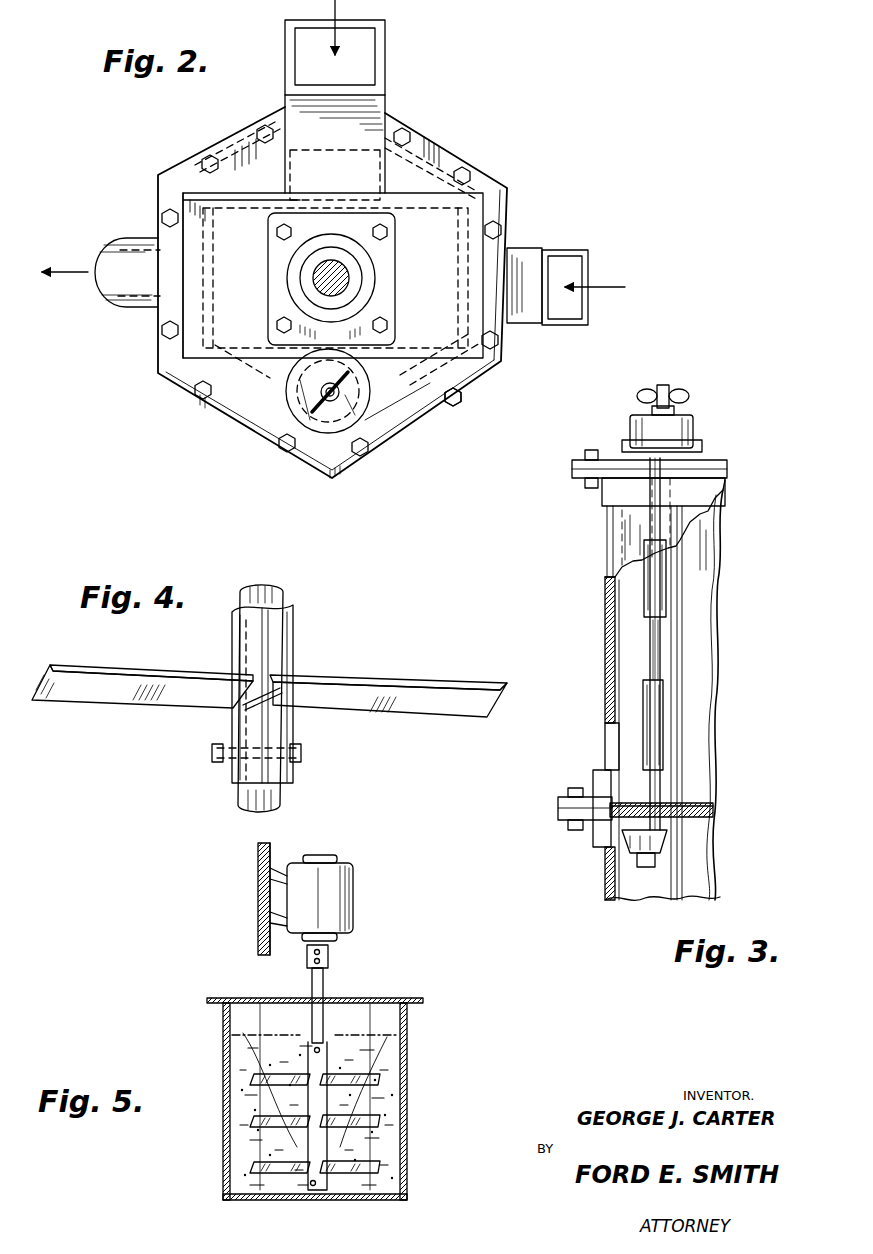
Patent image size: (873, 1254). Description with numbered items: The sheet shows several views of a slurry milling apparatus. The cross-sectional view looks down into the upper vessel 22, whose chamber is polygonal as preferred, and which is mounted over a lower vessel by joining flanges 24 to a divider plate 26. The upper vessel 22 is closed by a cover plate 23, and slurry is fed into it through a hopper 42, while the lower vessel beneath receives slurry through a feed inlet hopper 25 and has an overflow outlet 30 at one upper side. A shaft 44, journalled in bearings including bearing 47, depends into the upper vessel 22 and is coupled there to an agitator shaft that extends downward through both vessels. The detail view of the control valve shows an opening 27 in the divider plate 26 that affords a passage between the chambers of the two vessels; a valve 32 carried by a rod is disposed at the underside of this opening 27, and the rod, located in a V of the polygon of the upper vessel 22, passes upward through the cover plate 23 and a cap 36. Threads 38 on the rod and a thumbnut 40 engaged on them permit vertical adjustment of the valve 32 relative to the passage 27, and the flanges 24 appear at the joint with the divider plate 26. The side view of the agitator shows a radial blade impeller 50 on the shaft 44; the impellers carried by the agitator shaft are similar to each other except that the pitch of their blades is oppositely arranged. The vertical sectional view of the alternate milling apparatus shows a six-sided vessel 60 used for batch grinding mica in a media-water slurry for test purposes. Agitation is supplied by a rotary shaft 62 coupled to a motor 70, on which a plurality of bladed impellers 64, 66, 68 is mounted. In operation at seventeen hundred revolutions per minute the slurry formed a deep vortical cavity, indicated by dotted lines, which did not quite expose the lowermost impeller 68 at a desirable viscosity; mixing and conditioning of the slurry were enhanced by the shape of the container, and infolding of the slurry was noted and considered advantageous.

In FIG. 2, the upper vessel 22 is at (205, 150).
In FIG. 3, the upper vessel 22 is at (608, 610).
In FIG. 2, the cover plate 23 is at (258, 370).
In FIG. 3, the cover plate 23 is at (585, 460).
In FIG. 3, the flanges 24 is at (562, 800).
In FIG. 2, the feed inlet hopper 25 is at (548, 256).
In FIG. 3, the divider plate 26 is at (715, 812).
In FIG. 3, the opening 27 is at (670, 805).
In FIG. 2, the overflow outlet 30 is at (120, 247).
In FIG. 2, the valve 32 is at (375, 440).
In FIG. 3, the valve 32 is at (670, 843).
In FIG. 2, the cap 36 is at (290, 405).
In FIG. 3, the cap 36 is at (695, 432).
In FIG. 2, the threads 38 is at (345, 385).
In FIG. 3, the threads 38 is at (662, 385).
In FIG. 2, the thumbnut 40 is at (330, 400).
In FIG. 3, the thumbnut 40 is at (690, 402).
In FIG. 2, the hopper 42 is at (388, 52).
In FIG. 2, the shaft 44 is at (345, 278).
In FIG. 4, the shaft 44 is at (283, 605).
In FIG. 2, the bearing 47 is at (300, 275).
In FIG. 4, the radial blade impeller 50 is at (133, 674).
In FIG. 5, the six-sided vessel 60 is at (407, 1063).
In FIG. 5, the rotary shaft 62 is at (325, 975).
In FIG. 5, the bladed impeller 64 is at (262, 1056).
In FIG. 5, the bladed impeller 66 is at (258, 1110).
In FIG. 5, the bladed impeller 68 is at (258, 1158).
In FIG. 5, the motor 70 is at (340, 890).